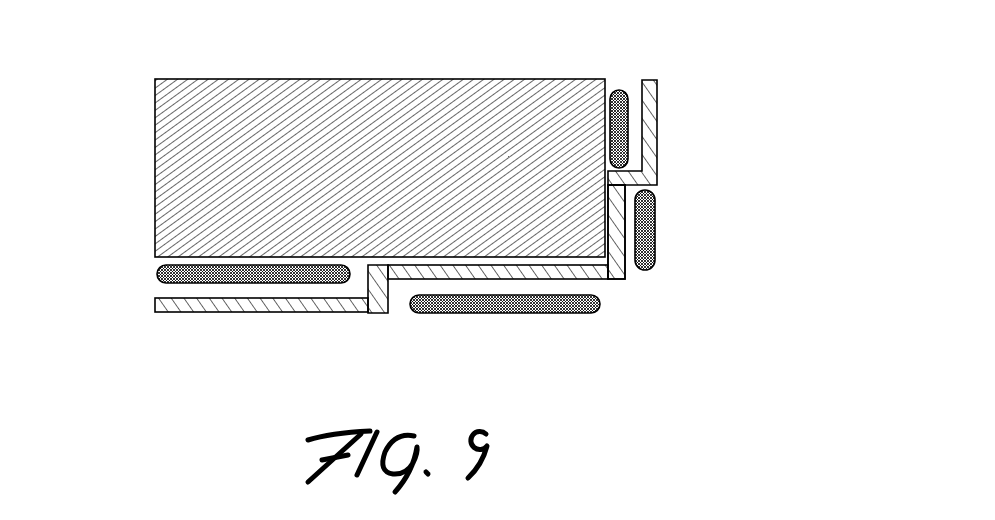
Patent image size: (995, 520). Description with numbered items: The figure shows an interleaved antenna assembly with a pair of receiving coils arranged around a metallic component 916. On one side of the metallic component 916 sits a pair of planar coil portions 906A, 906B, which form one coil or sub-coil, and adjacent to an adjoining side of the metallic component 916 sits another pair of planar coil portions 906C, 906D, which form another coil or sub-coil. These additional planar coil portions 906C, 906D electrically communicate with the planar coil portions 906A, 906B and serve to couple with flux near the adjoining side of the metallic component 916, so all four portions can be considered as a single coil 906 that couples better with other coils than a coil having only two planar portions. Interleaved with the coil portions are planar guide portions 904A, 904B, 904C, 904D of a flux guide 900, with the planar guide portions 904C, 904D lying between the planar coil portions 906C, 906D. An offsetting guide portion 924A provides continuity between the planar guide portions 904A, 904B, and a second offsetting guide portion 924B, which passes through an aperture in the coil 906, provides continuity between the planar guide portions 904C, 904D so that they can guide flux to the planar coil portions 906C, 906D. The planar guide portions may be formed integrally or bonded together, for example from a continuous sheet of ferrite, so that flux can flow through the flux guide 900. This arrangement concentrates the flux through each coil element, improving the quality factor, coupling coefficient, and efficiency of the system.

The flux guide 900 is at (417, 201).
The metallic component 916 is at (228, 79).
The planar guide portion 904A is at (193, 312).
The planar guide portion 904B is at (483, 280).
The planar guide portion 904C is at (625, 235).
The planar guide portion 904D is at (657, 140).
The coil 906 is at (392, 191).
The planar coil portion 906A is at (165, 278).
The planar coil portion 906B is at (520, 313).
The planar coil portion 906C is at (649, 270).
The planar coil portion 906D is at (620, 88).
The offsetting guide portion 924A is at (325, 368).
The offsetting guide portion 924B is at (657, 183).